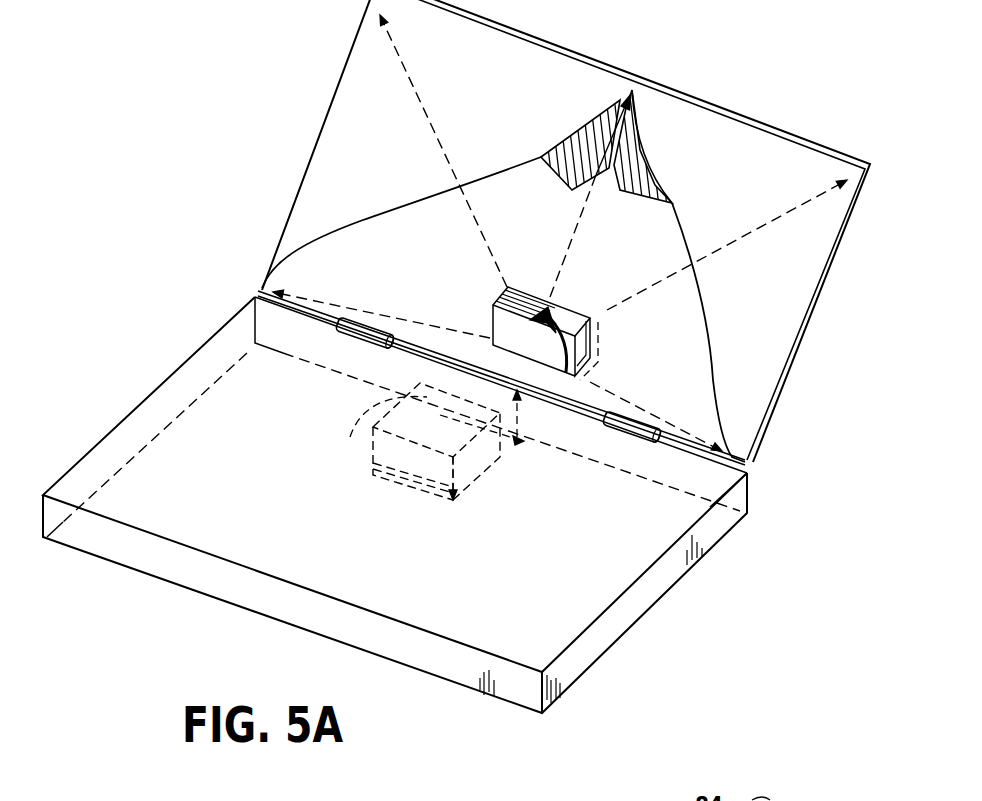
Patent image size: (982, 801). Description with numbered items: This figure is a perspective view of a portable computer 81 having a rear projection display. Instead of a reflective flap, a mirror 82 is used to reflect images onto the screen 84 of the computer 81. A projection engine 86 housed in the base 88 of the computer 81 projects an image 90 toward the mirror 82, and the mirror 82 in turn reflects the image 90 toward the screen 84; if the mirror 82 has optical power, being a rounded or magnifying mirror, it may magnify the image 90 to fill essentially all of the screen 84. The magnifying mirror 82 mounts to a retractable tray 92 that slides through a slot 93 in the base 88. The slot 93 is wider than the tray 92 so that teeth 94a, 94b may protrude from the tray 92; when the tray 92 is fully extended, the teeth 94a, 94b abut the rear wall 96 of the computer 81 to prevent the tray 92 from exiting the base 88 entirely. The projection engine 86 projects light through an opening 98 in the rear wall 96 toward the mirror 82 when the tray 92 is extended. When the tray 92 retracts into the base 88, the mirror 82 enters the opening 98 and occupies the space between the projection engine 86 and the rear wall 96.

The portable computer 81 is at (158, 308).
The screen 84 is at (855, 242).
The image 90 is at (552, 305).
The mirror 82 is at (598, 335).
The retractable tray 92 is at (600, 363).
The rear wall 96 is at (657, 470).
The opening 98 is at (400, 380).
The projection engine 86 is at (477, 465).
The slot 93 is at (383, 475).
The tooth 94a is at (538, 443).
The tooth 94b is at (372, 417).
The base 88 is at (178, 583).